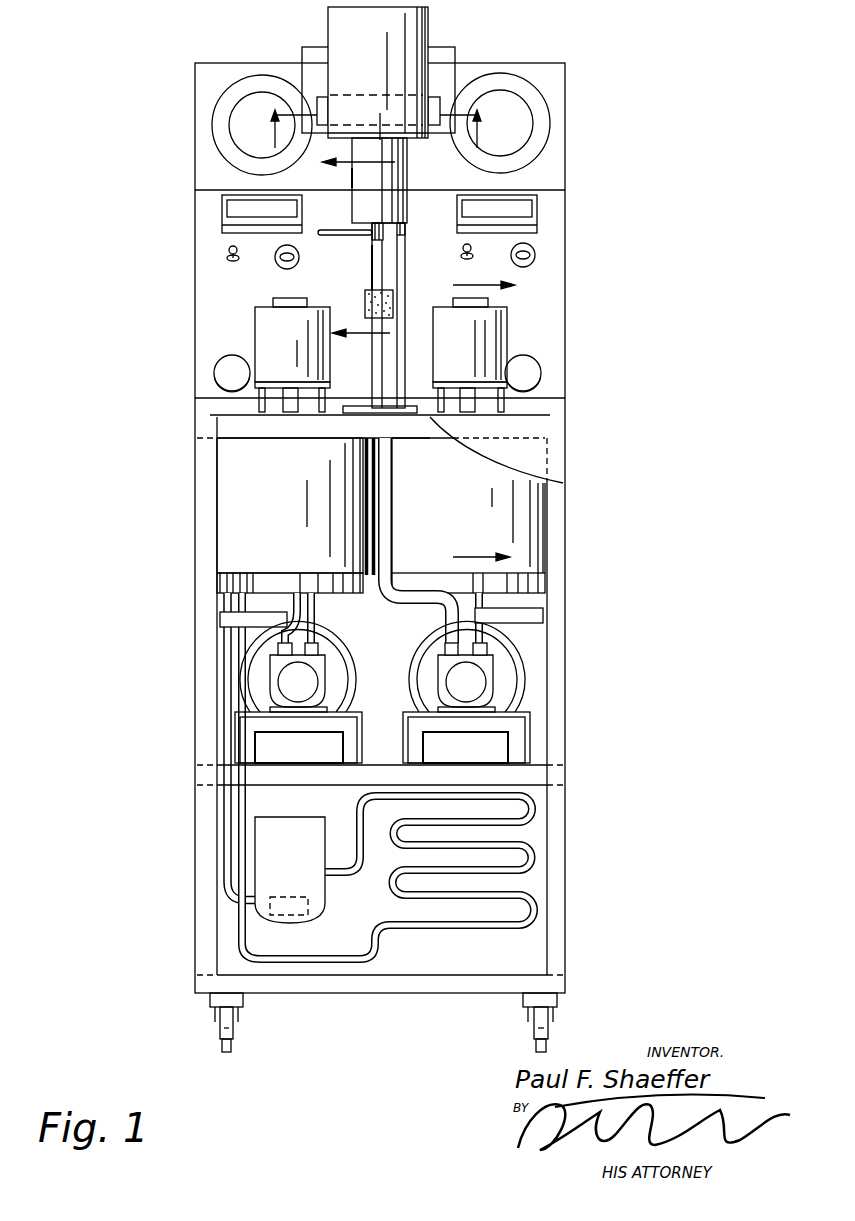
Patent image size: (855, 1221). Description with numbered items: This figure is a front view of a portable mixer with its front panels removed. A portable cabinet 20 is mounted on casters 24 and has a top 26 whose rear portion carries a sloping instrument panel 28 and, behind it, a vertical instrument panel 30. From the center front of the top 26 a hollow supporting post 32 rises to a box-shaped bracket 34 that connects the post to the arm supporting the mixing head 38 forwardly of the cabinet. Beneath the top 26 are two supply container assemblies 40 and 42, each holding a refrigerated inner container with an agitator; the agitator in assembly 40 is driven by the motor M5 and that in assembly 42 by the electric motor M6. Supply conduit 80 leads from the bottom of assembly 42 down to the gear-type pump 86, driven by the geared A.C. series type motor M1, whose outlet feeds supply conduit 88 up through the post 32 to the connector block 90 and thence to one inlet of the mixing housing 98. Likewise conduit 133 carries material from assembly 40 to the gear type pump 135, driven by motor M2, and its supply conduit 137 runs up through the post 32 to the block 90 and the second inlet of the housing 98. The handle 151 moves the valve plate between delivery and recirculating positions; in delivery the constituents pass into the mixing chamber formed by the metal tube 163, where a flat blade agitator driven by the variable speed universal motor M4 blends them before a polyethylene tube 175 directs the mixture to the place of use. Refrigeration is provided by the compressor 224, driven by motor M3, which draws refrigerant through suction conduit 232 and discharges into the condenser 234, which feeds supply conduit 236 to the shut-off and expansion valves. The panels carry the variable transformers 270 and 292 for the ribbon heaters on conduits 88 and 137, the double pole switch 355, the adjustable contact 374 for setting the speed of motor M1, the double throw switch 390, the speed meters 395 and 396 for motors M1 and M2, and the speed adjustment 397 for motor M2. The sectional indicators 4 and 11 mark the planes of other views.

The portable cabinet 20 is at (377, 997).
The caster 24 is at (223, 1024).
The top 26 is at (553, 415).
The sloping instrument panel 28 is at (557, 333).
The vertical instrument panel 30 is at (550, 95).
The hollow supporting post 32 is at (403, 267).
The box-shaped bracket 34 is at (442, 58).
The mixing head 38 is at (342, 23).
The supply container assembly 40 is at (227, 488).
The supply container assembly 42 is at (518, 497).
The supply conduit 80 is at (483, 603).
The gear-type pump 86 is at (472, 673).
The supply conduit 88 is at (438, 603).
The connector block 90 is at (433, 102).
The mixing housing 98 is at (360, 177).
The conduit 133 is at (300, 592).
The gear type pump 135 is at (303, 680).
The supply conduit 137 is at (362, 600).
The handle 151 is at (340, 230).
The metal tube (mixing sleeve) 163 is at (372, 260).
The polyethylene tube 175 is at (365, 303).
The refrigerant compressor 224 is at (310, 903).
The suction conduit 232 is at (230, 837).
The condenser 234 is at (445, 925).
The supply conduit 236 is at (247, 943).
The variable transformer 270 is at (540, 373).
The variable transformer 292 is at (220, 370).
The double pole switch 355 is at (462, 252).
The adjustable contact 374 is at (538, 257).
The double throw switch 390 is at (228, 252).
The speed meter 395 is at (540, 217).
The speed meter 396 is at (220, 215).
The speed adjustment 397 is at (287, 266).
The geared A.C. series type motor M1 is at (510, 680).
The geared A.C. series type motor M2 is at (275, 692).
The compressor motor M3 is at (275, 827).
The variable speed universal motor M4 is at (412, 18).
The motor M5 is at (255, 312).
The electric motor M6 is at (485, 330).
The section line 4- 4 is at (374, 247).
The section line 11- 11 is at (497, 416).